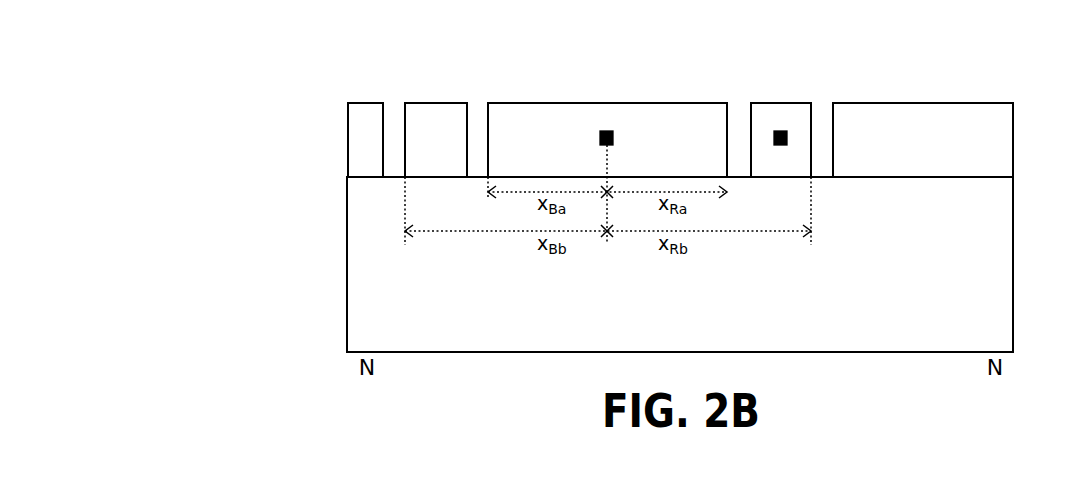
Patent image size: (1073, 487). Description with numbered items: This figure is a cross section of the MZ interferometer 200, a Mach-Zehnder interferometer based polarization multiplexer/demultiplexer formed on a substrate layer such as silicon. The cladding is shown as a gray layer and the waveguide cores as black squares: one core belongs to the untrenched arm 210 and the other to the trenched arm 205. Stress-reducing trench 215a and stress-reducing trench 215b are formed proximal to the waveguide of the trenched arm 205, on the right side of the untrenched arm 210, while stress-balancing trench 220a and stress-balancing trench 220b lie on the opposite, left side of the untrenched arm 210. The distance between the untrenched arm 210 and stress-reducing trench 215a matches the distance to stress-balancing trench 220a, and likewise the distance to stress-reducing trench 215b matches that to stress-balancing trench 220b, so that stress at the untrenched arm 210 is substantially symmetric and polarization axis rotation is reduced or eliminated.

The MZ interferometer 200 is at (172, 32).
The trenched arm 205 is at (810, 183).
The untrenched arm 210 is at (578, 88).
The stress-reducing trench 215a is at (737, 130).
The stress-reducing trench 215b is at (820, 130).
The stress-balancing trench 220a is at (478, 132).
The stress-balancing trench 220b is at (395, 132).